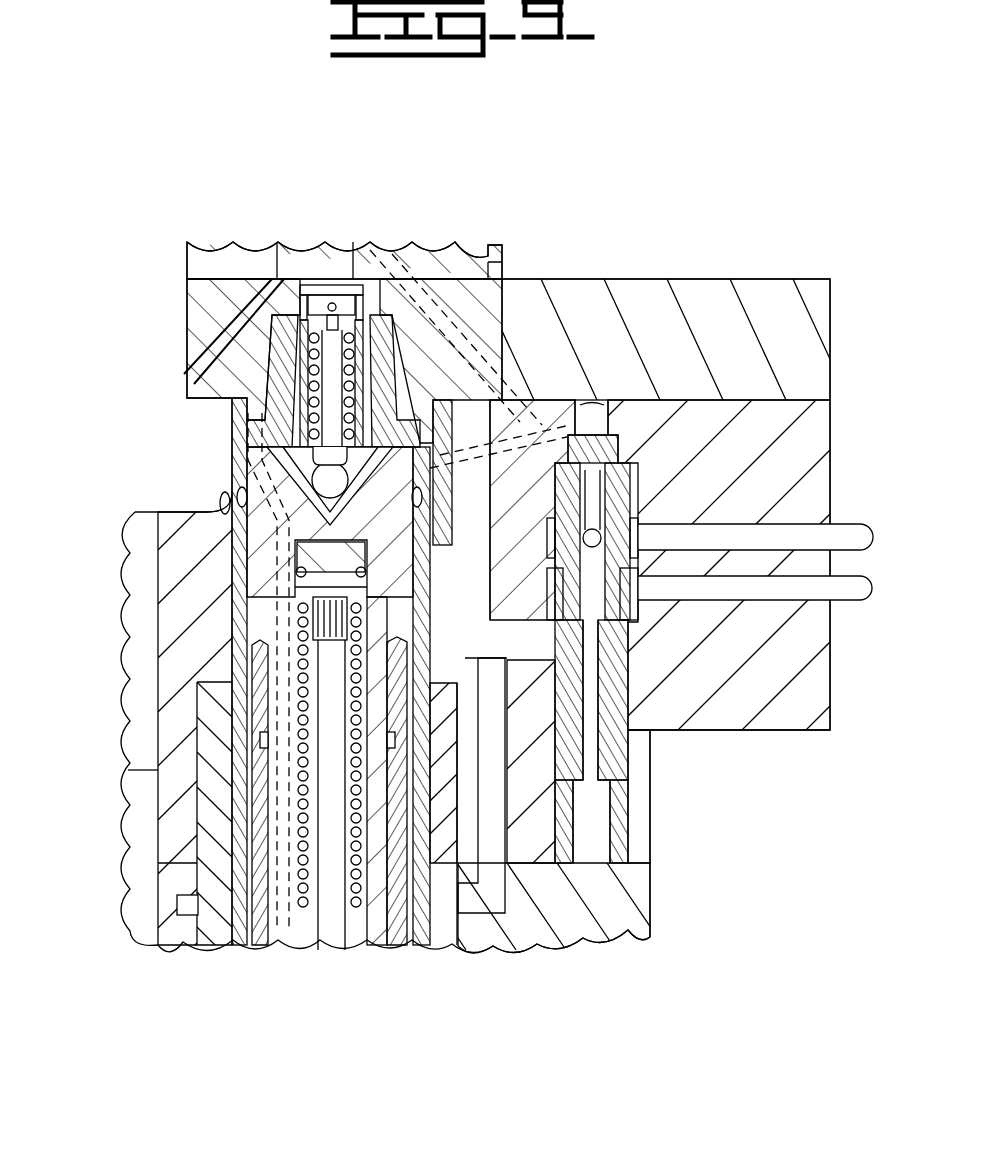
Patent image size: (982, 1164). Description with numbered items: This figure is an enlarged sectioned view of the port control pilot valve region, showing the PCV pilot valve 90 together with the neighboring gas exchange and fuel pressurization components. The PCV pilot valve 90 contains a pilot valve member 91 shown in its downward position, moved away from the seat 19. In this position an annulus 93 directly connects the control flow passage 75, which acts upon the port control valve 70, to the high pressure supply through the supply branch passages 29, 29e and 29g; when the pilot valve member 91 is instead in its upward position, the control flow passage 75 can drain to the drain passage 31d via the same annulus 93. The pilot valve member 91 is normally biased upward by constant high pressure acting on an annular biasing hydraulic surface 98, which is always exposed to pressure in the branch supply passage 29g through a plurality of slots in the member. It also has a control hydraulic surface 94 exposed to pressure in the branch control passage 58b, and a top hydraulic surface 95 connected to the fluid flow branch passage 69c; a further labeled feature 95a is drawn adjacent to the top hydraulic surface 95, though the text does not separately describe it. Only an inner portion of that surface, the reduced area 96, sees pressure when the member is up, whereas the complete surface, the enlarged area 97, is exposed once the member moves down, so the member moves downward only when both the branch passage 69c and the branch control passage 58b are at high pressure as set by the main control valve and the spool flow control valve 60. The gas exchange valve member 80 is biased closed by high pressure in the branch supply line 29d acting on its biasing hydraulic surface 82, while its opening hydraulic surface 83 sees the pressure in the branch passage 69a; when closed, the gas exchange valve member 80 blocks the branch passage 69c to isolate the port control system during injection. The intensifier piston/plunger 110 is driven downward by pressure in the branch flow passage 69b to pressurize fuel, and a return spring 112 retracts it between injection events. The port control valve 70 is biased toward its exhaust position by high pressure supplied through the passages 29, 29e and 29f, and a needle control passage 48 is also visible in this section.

The seat 19 is at (607, 448).
The high pressure supply line 29 is at (513, 418).
The branch supply line 29d is at (440, 590).
The supply branch passage 29e is at (560, 863).
The supply branch passage 29f is at (476, 882).
The high pressure supply branch passage 29g is at (548, 690).
The drain passage 31d is at (838, 527).
The needle control passage 48 is at (215, 387).
The branch control passage 58b is at (402, 398).
The spool flow control valve 60 is at (293, 378).
The branch fluid flow passage 69a is at (407, 445).
The branch flow passage 69b is at (293, 522).
The fluid flow branch passage 69c is at (368, 247).
The port control valve 70 is at (447, 625).
The control flow passage 75 is at (847, 600).
The gas exchange valve member 80 is at (250, 647).
The biasing hydraulic surface 82 is at (440, 640).
The opening hydraulic surface 83 is at (225, 470).
The PCV pilot valve 90 is at (643, 403).
The pilot valve member 91 is at (545, 655).
The annulus 93 is at (540, 695).
The control hydraulic surface 94 is at (620, 487).
The top hydraulic surface 95 is at (582, 418).
The passage 95a is at (563, 418).
The reduced area 96 is at (527, 417).
The enlarged area 97 is at (565, 466).
The annular biasing hydraulic surface 98 is at (530, 712).
The intensifier piston/plunger 110 is at (297, 723).
The return spring 112 is at (262, 845).